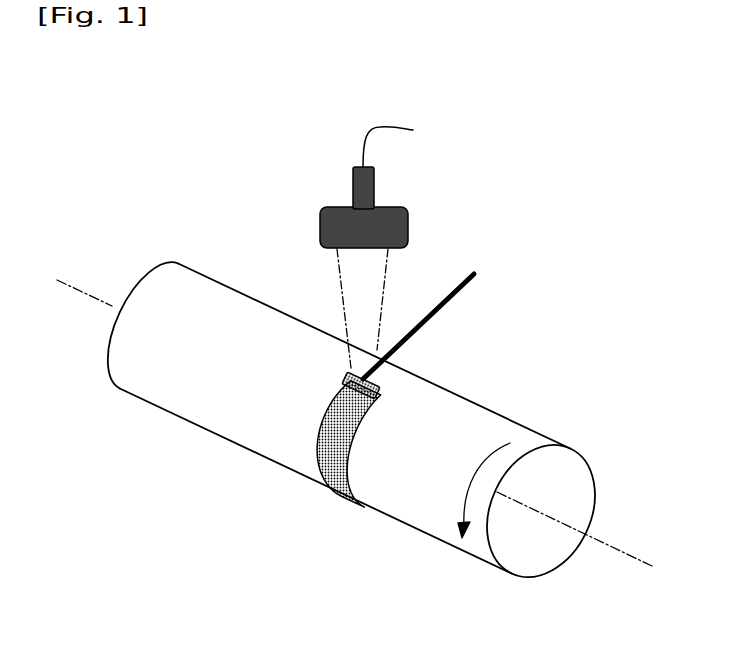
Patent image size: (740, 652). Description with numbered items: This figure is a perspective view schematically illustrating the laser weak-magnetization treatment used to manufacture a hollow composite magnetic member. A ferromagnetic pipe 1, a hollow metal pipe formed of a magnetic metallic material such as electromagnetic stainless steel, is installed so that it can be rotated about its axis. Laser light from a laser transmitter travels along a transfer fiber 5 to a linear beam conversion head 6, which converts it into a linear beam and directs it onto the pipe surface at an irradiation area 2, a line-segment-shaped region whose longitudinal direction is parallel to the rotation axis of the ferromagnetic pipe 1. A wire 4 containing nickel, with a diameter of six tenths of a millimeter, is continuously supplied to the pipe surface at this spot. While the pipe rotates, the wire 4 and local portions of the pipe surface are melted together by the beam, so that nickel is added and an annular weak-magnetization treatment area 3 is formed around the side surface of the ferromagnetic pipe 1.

The ferromagnetic pipe 1 is at (481, 418).
The irradiation area 2 is at (345, 378).
The weak-magnetization treatment area 3 is at (328, 425).
The wire 4 is at (445, 309).
The transfer fiber 5 is at (390, 129).
The linear beam conversion head 6 is at (400, 207).